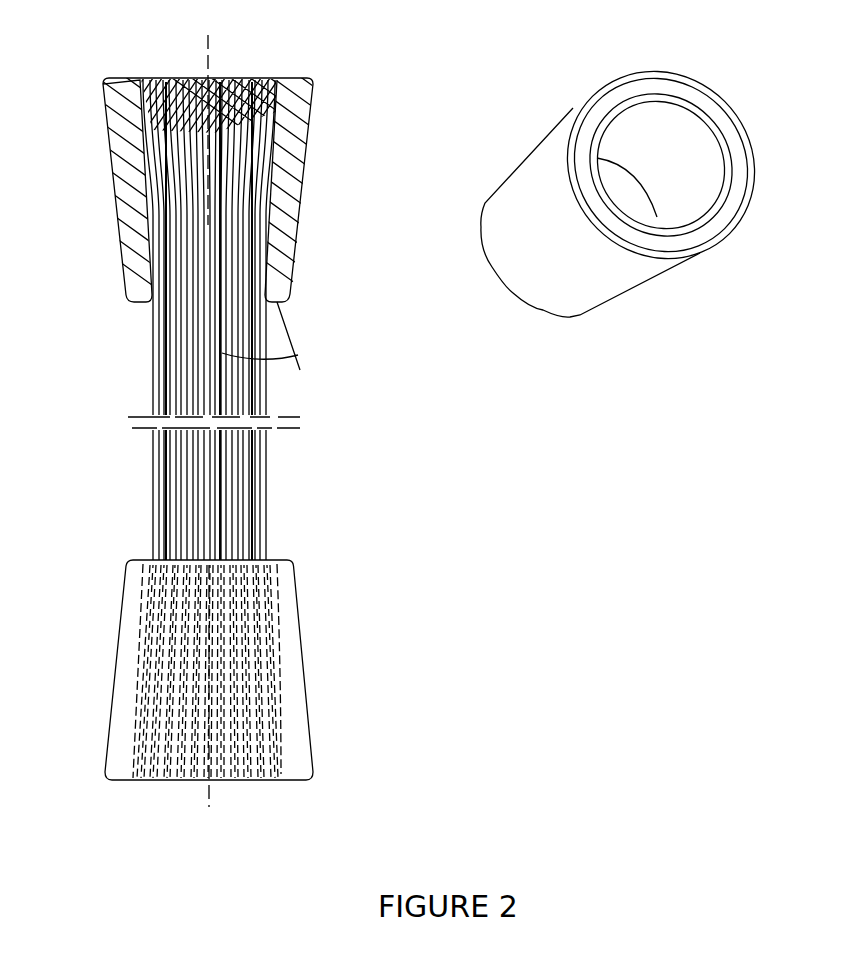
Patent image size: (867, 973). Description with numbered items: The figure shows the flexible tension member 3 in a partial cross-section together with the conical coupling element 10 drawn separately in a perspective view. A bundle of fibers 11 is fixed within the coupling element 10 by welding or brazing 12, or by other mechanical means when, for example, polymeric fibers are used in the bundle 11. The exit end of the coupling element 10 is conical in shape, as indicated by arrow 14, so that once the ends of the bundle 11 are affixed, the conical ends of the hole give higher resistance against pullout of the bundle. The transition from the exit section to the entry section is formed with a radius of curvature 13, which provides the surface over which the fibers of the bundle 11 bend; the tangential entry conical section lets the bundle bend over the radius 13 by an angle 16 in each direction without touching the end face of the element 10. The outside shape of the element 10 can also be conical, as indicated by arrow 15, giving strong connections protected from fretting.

The tension member 3 is at (127, 53).
The conical coupling element 10 is at (300, 143).
The bundle of fibers 11 is at (253, 385).
The welding or brazing 12 is at (233, 92).
The radius of curvature 13 is at (273, 265).
The conical exit end 14 is at (273, 177).
The conical outside shape 15 is at (302, 623).
The angle 16 is at (298, 355).